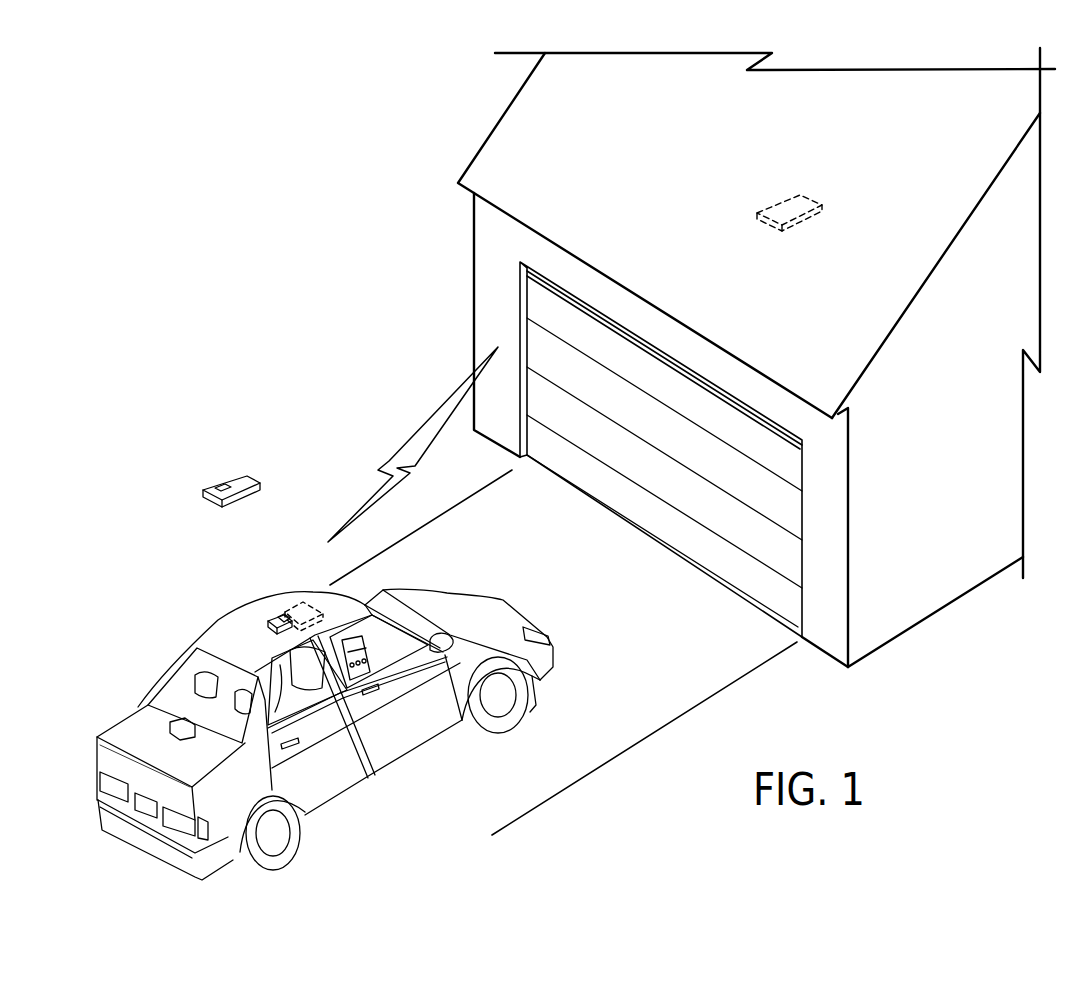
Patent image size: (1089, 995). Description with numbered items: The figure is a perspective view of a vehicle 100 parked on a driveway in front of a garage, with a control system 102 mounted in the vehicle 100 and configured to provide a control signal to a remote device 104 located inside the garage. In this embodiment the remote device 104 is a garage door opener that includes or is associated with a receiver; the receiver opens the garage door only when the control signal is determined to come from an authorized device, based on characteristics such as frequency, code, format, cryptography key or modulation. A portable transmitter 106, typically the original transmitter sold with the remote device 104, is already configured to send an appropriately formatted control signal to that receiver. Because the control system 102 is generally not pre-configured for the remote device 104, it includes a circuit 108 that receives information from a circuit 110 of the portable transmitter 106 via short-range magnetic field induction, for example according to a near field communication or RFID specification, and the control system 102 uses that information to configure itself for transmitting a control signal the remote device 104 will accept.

The vehicle 100 is at (379, 828).
The control system 102 is at (295, 610).
The remote device 104 is at (785, 207).
The portable transmitter 106 is at (242, 483).
The circuit 108 is at (277, 618).
The circuit 110 is at (217, 485).